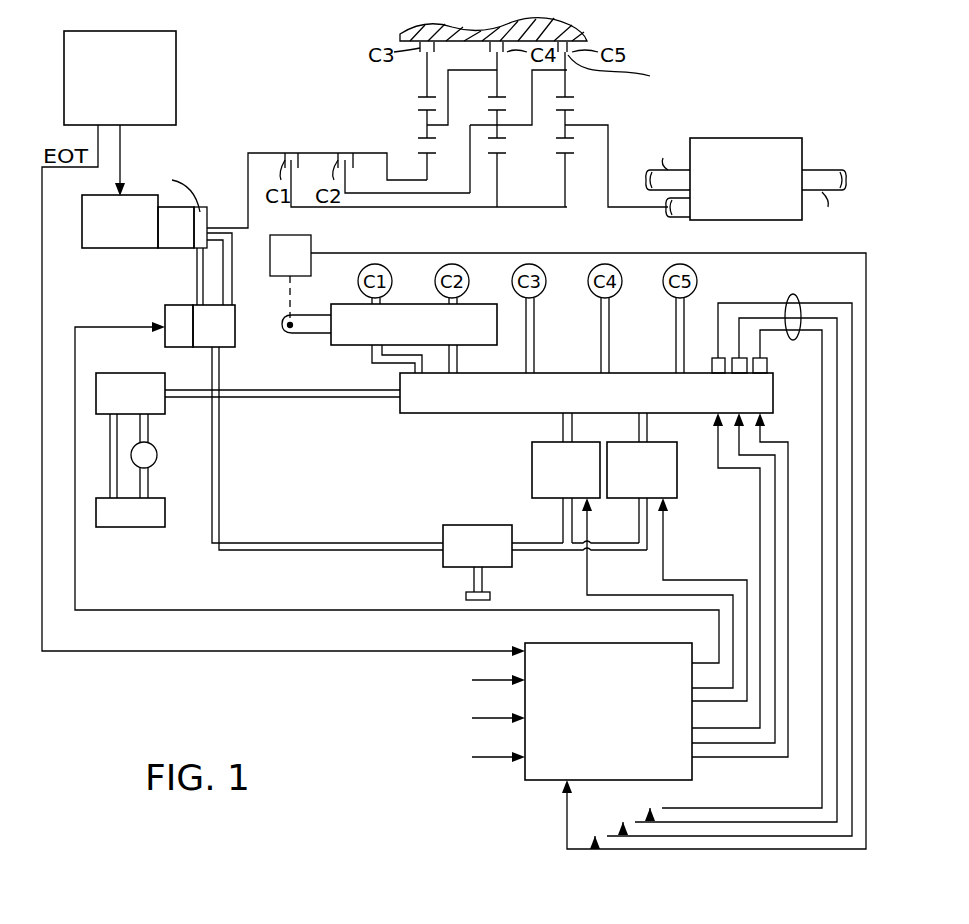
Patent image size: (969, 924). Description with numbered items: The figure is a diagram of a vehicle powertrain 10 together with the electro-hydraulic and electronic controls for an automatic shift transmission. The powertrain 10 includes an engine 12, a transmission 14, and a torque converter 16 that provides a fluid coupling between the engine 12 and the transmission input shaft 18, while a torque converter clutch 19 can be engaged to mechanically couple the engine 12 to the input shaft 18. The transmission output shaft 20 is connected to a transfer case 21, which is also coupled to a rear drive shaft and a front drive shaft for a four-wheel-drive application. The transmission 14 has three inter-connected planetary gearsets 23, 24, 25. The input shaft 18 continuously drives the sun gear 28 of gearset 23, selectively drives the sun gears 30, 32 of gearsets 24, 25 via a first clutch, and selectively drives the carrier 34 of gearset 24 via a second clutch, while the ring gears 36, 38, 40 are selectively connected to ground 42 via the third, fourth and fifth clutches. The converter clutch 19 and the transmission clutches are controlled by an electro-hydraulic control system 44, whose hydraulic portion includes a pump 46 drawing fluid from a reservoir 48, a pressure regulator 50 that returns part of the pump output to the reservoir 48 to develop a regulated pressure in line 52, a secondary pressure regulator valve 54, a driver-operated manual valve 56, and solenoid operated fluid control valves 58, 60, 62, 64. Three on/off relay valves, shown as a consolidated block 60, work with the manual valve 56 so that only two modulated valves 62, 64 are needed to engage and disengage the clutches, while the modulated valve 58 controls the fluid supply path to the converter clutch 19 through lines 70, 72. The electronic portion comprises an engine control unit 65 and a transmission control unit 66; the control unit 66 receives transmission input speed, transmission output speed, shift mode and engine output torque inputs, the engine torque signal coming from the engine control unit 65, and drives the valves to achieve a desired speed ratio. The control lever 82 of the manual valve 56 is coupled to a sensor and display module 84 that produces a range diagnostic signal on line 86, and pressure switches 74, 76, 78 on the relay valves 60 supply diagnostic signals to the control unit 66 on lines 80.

The vehicle powertrain 10 is at (276, 92).
The engine 12 is at (108, 248).
The transmission 14 is at (382, 117).
The torque converter 16 is at (171, 248).
The transmission input shaft 18 is at (248, 162).
The torque converter clutch 19 is at (207, 212).
The transmission output shaft 20 is at (610, 205).
The transfer case 21 is at (733, 138).
The planetary gearset 23 is at (445, 135).
The planetary gearset 24 is at (514, 136).
The planetary gearset 25 is at (583, 110).
The sun gear 28 is at (427, 170).
The sun gear 30 is at (500, 206).
The sun gear 32 is at (570, 206).
The carrier 34 is at (470, 123).
The ring gear 36 is at (427, 70).
The ring gear 38 is at (490, 52).
The ring gear 40 is at (618, 83).
The ground 42 is at (590, 29).
The electro-hydraulic control system 44 is at (876, 292).
The pump 46 is at (158, 455).
The reservoir 48 is at (165, 514).
The pressure regulator 50 is at (133, 373).
The line 52 is at (305, 399).
The secondary pressure regulator valve 54 is at (443, 562).
The manual valve 56 is at (358, 346).
The solenoid operated fluid control valve 58 is at (236, 334).
The relay valves 60 is at (422, 415).
The modulated valve 62 is at (532, 487).
The modulated valve 64 is at (678, 483).
The engine control unit 65 is at (178, 110).
The transmission control unit 66 is at (538, 780).
The line 70 is at (197, 290).
The line 72 is at (233, 286).
The pressure switch 74 is at (712, 358).
The pressure switch 76 is at (748, 373).
The pressure switch 78 is at (767, 365).
The lines 80 is at (796, 312).
The control lever 82 is at (310, 337).
The sensor and display module 84 is at (311, 240).
The line 86 is at (738, 256).